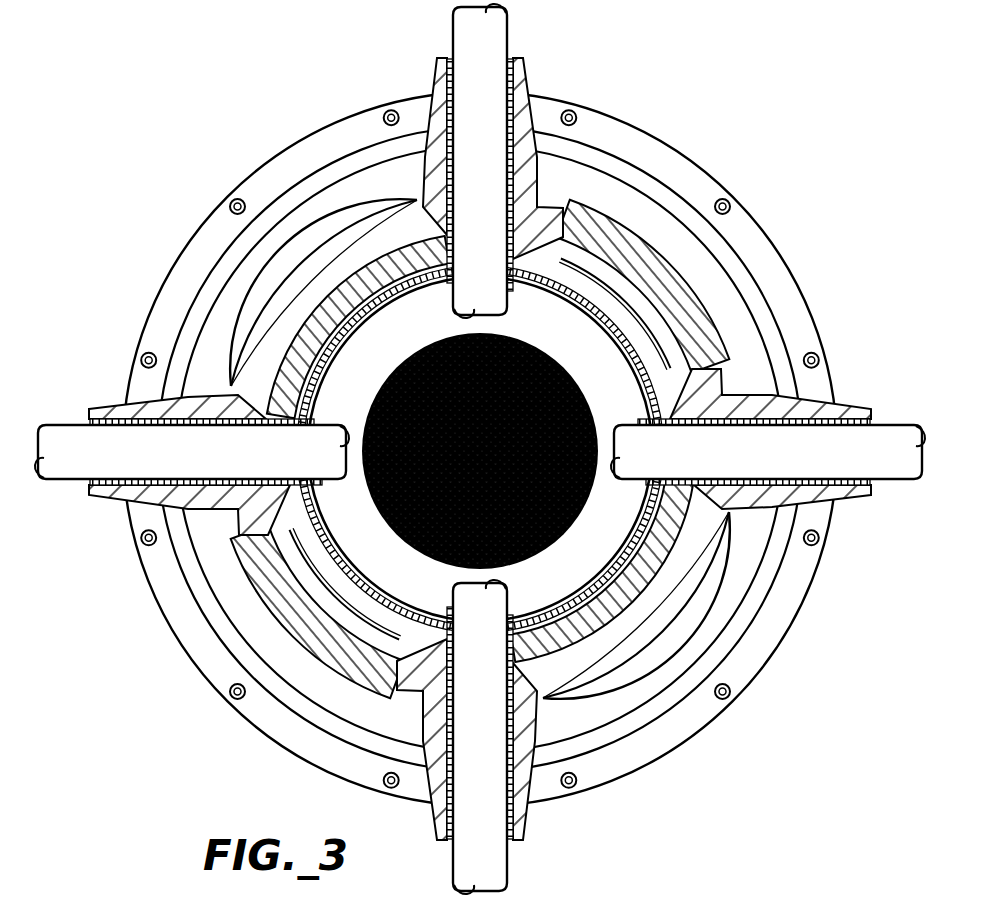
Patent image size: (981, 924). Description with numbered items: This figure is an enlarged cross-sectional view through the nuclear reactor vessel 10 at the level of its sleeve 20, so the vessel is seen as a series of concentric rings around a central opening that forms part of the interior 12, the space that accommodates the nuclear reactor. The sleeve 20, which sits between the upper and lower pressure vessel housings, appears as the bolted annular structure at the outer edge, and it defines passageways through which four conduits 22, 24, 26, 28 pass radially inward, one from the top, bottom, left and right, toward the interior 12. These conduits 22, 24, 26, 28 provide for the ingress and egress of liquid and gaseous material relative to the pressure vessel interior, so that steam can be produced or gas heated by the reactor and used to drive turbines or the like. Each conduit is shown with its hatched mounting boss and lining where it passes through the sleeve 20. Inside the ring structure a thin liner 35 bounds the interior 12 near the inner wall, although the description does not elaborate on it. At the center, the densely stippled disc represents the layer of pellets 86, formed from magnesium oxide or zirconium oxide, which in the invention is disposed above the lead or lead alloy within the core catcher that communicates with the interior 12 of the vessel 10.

The nuclear reactor vessel 10 is at (495, 408).
The interior 12 is at (480, 449).
The sleeve 20 is at (480, 449).
The conduit 22 is at (515, 161).
The conduit 24 is at (192, 429).
The conduit 26 is at (512, 737).
The conduit 28 is at (769, 430).
The liner 35 is at (480, 449).
The layer of pellets 86 is at (480, 460).